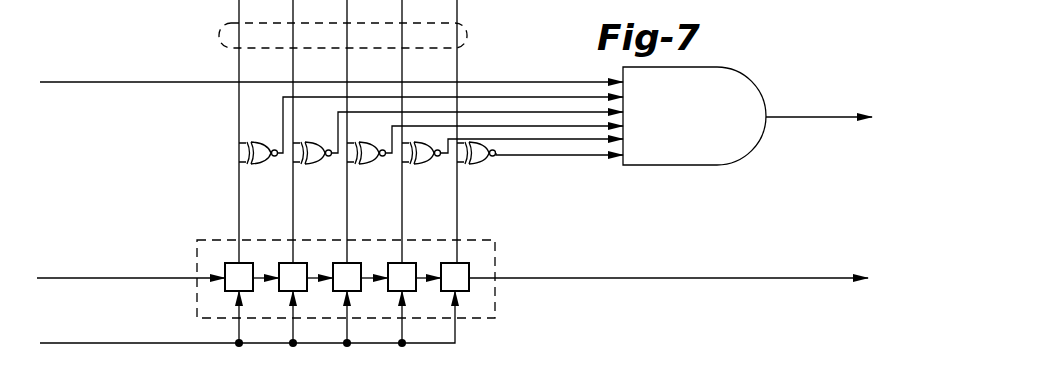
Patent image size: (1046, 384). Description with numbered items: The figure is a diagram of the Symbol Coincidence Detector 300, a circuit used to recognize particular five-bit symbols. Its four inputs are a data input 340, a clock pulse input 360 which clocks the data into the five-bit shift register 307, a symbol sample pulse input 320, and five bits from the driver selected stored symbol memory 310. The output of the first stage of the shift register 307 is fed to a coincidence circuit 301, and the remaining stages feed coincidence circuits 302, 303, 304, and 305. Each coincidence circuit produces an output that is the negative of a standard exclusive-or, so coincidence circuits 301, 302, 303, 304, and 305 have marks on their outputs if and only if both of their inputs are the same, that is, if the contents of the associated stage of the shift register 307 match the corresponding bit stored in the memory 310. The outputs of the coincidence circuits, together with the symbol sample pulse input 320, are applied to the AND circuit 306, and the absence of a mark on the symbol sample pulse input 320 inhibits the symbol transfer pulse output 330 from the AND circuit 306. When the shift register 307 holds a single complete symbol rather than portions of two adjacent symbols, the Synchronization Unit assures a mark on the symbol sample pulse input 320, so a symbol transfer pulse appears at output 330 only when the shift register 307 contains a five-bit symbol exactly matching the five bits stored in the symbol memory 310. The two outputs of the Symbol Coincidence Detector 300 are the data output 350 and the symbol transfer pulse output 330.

The Symbol Coincidence Detector 300 is at (527, 303).
The coincidence circuit 301 is at (258, 166).
The coincidence circuit 302 is at (312, 166).
The coincidence circuit 303 is at (365, 166).
The coincidence circuit 304 is at (419, 166).
The coincidence circuit 305 is at (476, 166).
The AND circuit 306 is at (697, 166).
The 5-bit shift register 307 is at (492, 258).
The driver selected stored symbol memory 310 is at (469, 30).
The symbol sample pulse input 320 is at (142, 57).
The symbol transfer pulse output 330 is at (826, 103).
The data input 340 is at (70, 278).
The data output 350 is at (641, 278).
The clock pulse input 360 is at (78, 343).